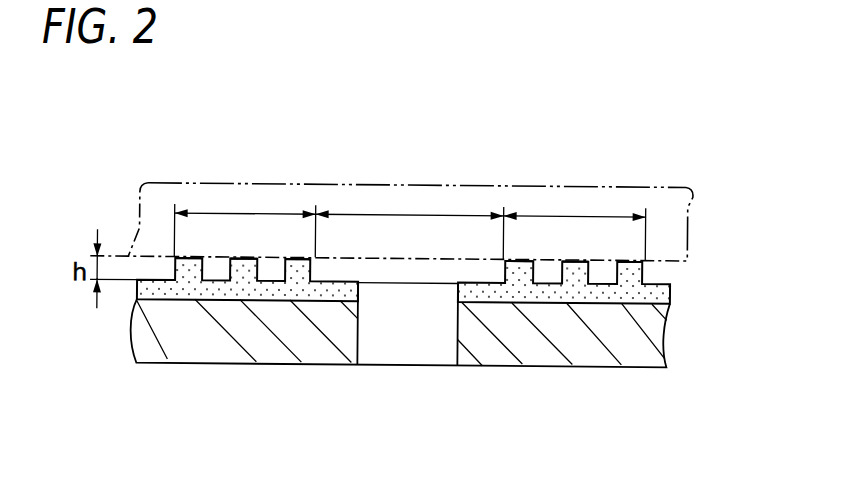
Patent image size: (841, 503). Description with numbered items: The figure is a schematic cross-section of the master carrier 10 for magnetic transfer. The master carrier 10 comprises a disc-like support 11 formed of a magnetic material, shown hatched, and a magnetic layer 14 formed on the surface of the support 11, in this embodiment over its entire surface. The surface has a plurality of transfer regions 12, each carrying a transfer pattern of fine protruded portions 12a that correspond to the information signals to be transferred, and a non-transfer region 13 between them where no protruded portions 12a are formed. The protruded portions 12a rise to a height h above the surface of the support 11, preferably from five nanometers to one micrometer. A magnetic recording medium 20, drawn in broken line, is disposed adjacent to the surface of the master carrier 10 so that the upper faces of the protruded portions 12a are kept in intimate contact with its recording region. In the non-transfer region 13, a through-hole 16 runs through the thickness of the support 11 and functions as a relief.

The magnetic recording medium 20 is at (176, 174).
The transfer region 12 is at (244, 215).
The non-transfer region 13 is at (412, 215).
The magnetic layer 14 is at (670, 293).
The protruded portion 12a is at (188, 275).
The master carrier 10 is at (360, 358).
The support 11 is at (320, 358).
The through-hole 16 is at (360, 333).